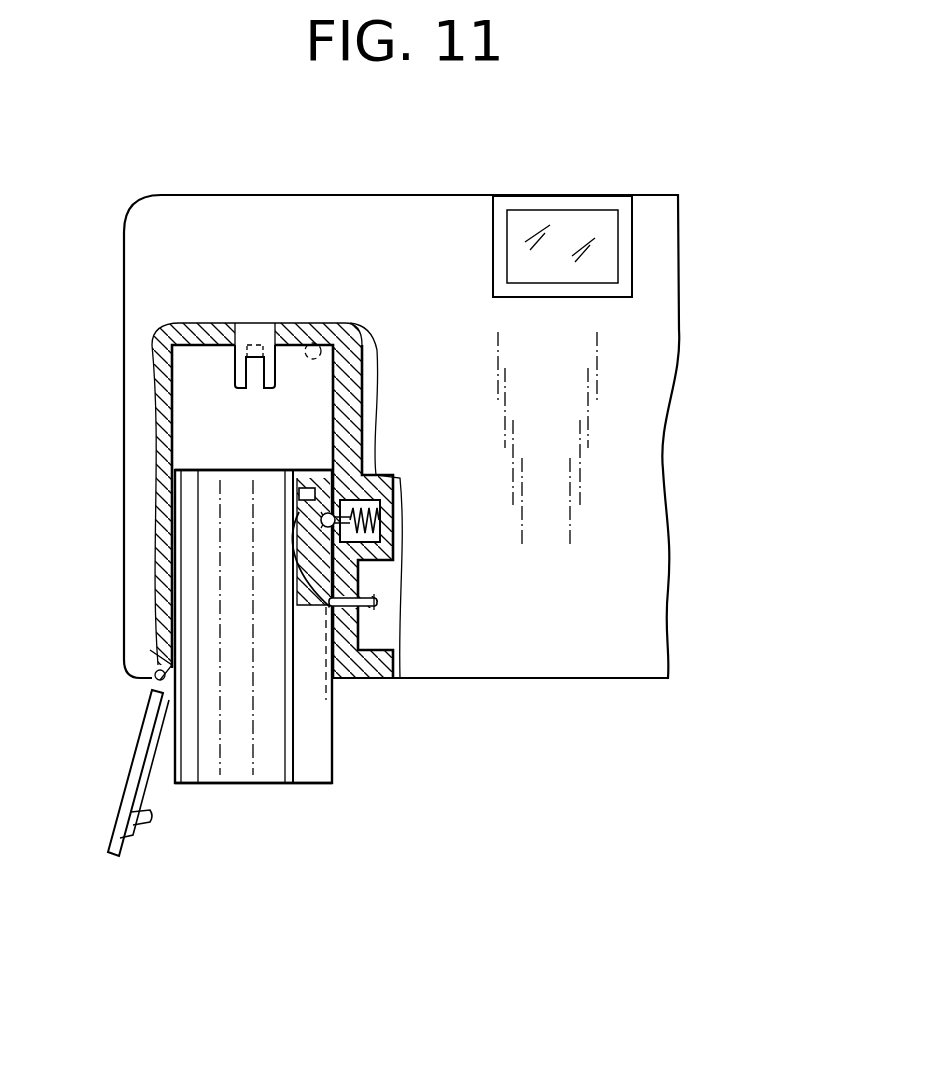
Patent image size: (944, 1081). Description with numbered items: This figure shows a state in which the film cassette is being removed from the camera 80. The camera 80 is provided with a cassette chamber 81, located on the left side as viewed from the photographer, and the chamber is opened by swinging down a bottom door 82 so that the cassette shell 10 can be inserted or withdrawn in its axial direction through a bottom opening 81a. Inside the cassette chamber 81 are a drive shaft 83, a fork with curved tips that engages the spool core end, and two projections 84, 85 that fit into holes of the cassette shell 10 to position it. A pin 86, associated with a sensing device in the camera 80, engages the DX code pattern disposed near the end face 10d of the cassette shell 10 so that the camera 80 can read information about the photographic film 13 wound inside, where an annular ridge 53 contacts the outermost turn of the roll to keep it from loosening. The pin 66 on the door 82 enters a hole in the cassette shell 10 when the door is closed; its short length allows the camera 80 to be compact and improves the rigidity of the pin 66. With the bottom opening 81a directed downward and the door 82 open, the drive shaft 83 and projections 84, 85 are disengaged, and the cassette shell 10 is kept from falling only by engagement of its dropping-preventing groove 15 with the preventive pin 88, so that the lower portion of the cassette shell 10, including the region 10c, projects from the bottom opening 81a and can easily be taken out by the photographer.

The camera 80 is at (243, 194).
The cassette chamber 81 is at (180, 383).
The bottom opening 81a is at (348, 679).
The bottom door 82 is at (133, 750).
The drive shaft 83 is at (233, 378).
The projection 84 is at (220, 340).
The projection 85 is at (328, 347).
The pin 86 is at (372, 608).
The preventive pin 88 is at (370, 500).
The cassette shell 10 is at (258, 770).
The upper end of cartridge 10c is at (241, 469).
The end face 10d is at (238, 784).
The photographic film 13 is at (300, 522).
The dropping-preventing groove 15 is at (298, 550).
The annular ridge 53 is at (320, 518).
The pin 66 is at (153, 815).